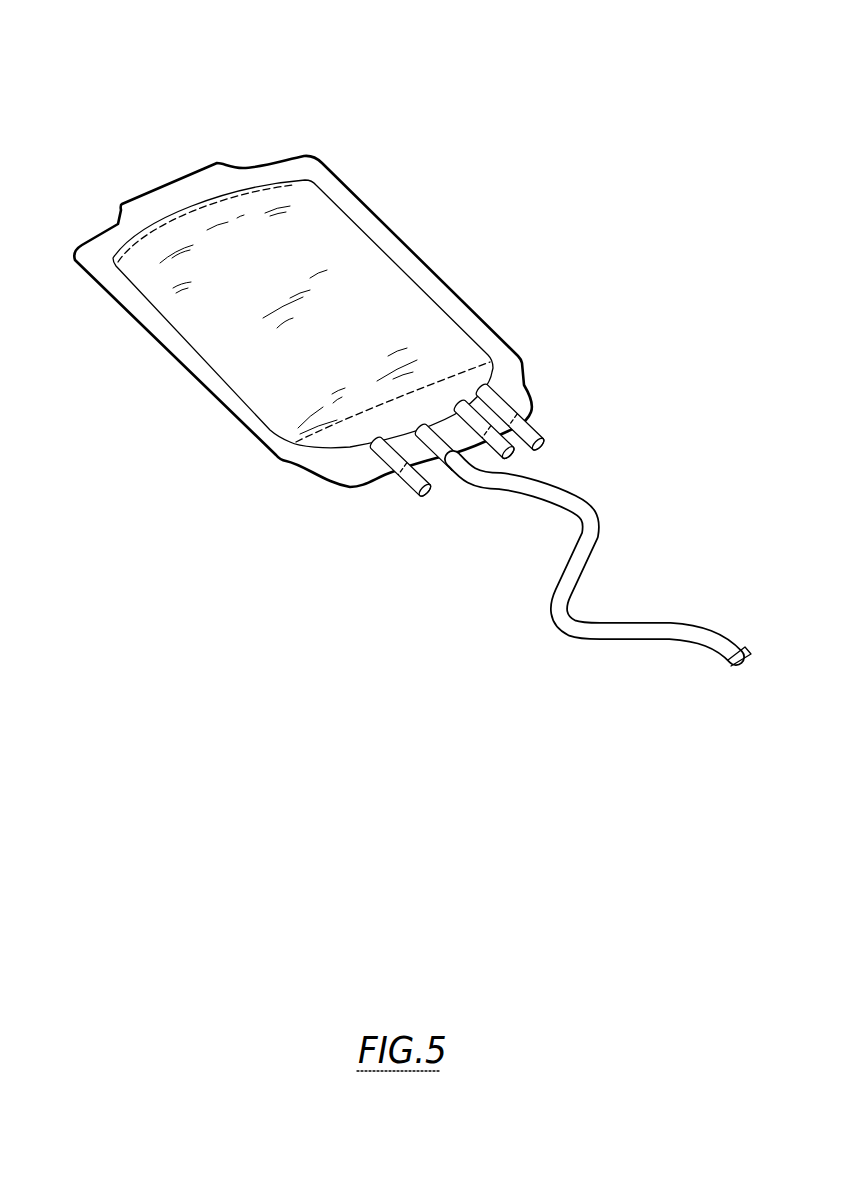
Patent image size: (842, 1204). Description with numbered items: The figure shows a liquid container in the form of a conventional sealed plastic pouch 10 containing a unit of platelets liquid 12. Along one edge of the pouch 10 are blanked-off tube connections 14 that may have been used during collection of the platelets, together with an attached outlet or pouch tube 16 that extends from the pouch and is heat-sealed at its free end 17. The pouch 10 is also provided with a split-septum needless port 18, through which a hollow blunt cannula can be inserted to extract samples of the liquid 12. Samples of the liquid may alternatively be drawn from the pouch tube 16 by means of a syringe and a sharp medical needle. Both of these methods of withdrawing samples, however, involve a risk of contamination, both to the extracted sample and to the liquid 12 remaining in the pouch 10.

The sealed plastic pouch 10 is at (468, 247).
The platelets liquid 12 is at (270, 205).
The blanked-off tube connections 14 is at (520, 465).
The pouch tube 16 is at (557, 574).
The free end 17 is at (727, 662).
The split-septum needless port 18 is at (541, 430).